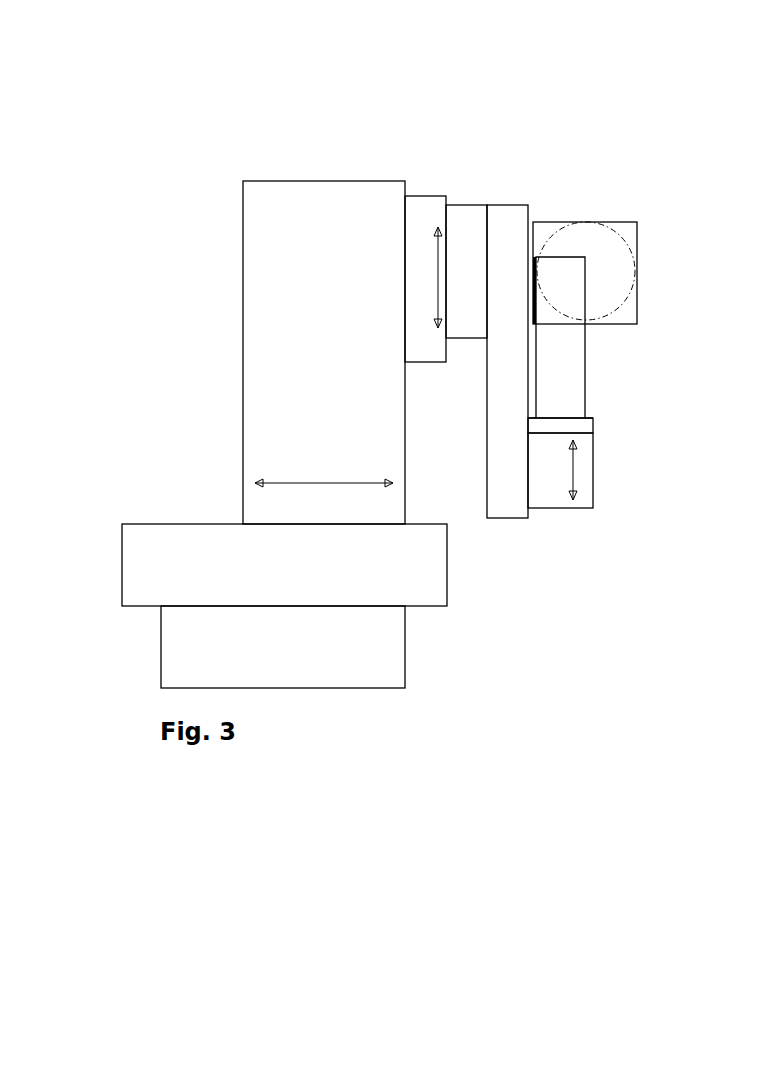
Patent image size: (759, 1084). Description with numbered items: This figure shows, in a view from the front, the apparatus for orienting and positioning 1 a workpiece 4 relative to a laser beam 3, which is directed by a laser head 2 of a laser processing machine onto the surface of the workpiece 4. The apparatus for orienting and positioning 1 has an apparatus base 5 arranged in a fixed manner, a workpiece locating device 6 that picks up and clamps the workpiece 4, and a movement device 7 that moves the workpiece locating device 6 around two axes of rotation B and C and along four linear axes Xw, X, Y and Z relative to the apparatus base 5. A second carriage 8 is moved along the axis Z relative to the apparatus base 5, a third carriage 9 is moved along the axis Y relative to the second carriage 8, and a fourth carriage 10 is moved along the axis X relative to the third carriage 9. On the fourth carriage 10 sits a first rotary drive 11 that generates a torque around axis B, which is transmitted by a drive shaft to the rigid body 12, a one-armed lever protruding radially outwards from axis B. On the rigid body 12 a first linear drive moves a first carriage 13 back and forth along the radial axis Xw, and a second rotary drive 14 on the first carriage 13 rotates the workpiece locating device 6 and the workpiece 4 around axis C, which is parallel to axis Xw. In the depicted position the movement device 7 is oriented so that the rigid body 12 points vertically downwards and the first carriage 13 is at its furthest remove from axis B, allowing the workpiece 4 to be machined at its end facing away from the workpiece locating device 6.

The apparatus for orienting and positioning 1 is at (197, 197).
The laser head 2 is at (627, 220).
The laser beam 3 is at (585, 273).
The workpiece 4 is at (568, 332).
The apparatus base 5 is at (367, 660).
The workpiece locating device 6 is at (558, 421).
The movement device 7 is at (203, 453).
The second carriage 8 is at (408, 580).
The third carriage 9 is at (262, 403).
The fourth carriage 10 is at (422, 215).
The first rotary drive 11 is at (452, 316).
The rigid body 12 is at (510, 235).
The first carriage 13 is at (588, 482).
The second rotary drive 14 is at (573, 427).